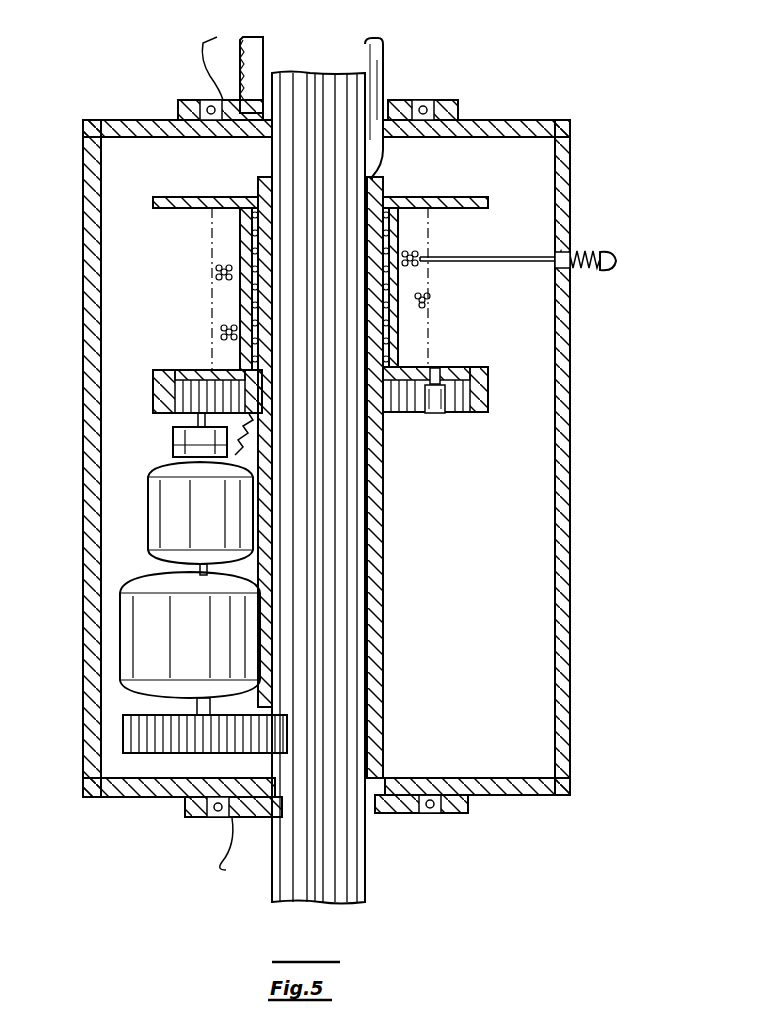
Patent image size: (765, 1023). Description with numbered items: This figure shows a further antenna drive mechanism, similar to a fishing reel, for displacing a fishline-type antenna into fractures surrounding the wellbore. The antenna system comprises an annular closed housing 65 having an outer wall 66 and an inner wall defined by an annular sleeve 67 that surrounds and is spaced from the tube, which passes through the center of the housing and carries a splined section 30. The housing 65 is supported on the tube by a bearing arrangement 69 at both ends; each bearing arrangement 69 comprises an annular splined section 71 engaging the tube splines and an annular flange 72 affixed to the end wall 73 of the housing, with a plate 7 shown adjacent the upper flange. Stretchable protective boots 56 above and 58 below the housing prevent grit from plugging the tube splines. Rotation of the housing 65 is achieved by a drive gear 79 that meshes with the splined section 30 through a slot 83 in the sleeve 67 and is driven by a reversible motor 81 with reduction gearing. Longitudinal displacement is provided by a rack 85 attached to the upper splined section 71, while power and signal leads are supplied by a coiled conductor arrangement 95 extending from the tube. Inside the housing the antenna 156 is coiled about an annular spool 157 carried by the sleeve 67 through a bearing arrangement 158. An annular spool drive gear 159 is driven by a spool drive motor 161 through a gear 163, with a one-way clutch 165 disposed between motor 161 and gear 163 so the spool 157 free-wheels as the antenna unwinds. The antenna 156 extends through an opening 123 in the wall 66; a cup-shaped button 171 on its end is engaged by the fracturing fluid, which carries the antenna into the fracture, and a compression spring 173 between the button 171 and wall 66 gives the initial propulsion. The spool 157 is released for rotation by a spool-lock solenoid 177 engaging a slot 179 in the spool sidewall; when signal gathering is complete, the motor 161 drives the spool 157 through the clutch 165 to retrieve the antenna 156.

The plate 7 is at (319, 67).
The splined section 30 is at (292, 869).
The protective boot 56 is at (411, 99).
The protective boot 58 is at (440, 855).
The annular closed housing 65 is at (580, 526).
The outer wall 66 is at (573, 458).
The annular sleeve 67 is at (383, 609).
The bearing arrangement 69 is at (198, 99).
The annular splined section 71 is at (388, 815).
The annular flange 72 is at (445, 96).
The end wall 73 is at (505, 119).
The drive gear 79 is at (125, 741).
The reversible motor 81 is at (190, 660).
The slot 83 is at (262, 756).
The rack 85 is at (258, 58).
The conductor arrangement 95 is at (378, 46).
The opening 123 is at (572, 266).
The antenna 156 is at (493, 251).
The annular spool 157 is at (455, 197).
The bearing arrangement 158 is at (389, 210).
The annular spool drive gear 159 is at (455, 413).
The spool drive motor 161 is at (175, 517).
The gear 163 is at (182, 378).
The one-way clutch 165 is at (173, 434).
The cup-shaped button 171 is at (614, 262).
The compression spring 173 is at (590, 254).
The solenoid 177 is at (428, 414).
The slot 179 is at (438, 368).